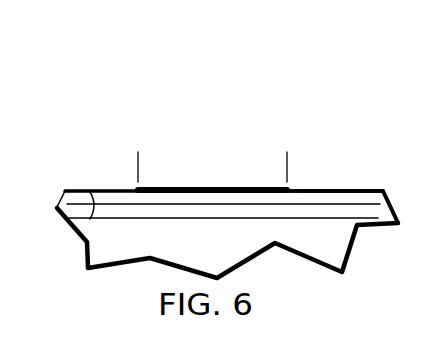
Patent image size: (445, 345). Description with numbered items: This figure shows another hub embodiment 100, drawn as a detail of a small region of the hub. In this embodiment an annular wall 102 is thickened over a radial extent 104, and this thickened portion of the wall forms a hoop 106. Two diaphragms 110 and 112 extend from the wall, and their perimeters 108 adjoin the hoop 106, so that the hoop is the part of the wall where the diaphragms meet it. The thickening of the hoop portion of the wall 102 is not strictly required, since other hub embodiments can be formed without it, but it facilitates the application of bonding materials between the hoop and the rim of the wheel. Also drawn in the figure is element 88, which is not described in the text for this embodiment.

The sensor assembly 100 is at (298, 145).
The housing 102 is at (57, 207).
The coating length 104 is at (287, 158).
The coating 106 is at (217, 187).
The uncoated end portion 108 is at (297, 188).
The first end 110 is at (67, 187).
The second end 112 is at (370, 187).
The substrate 88 is at (127, 190).